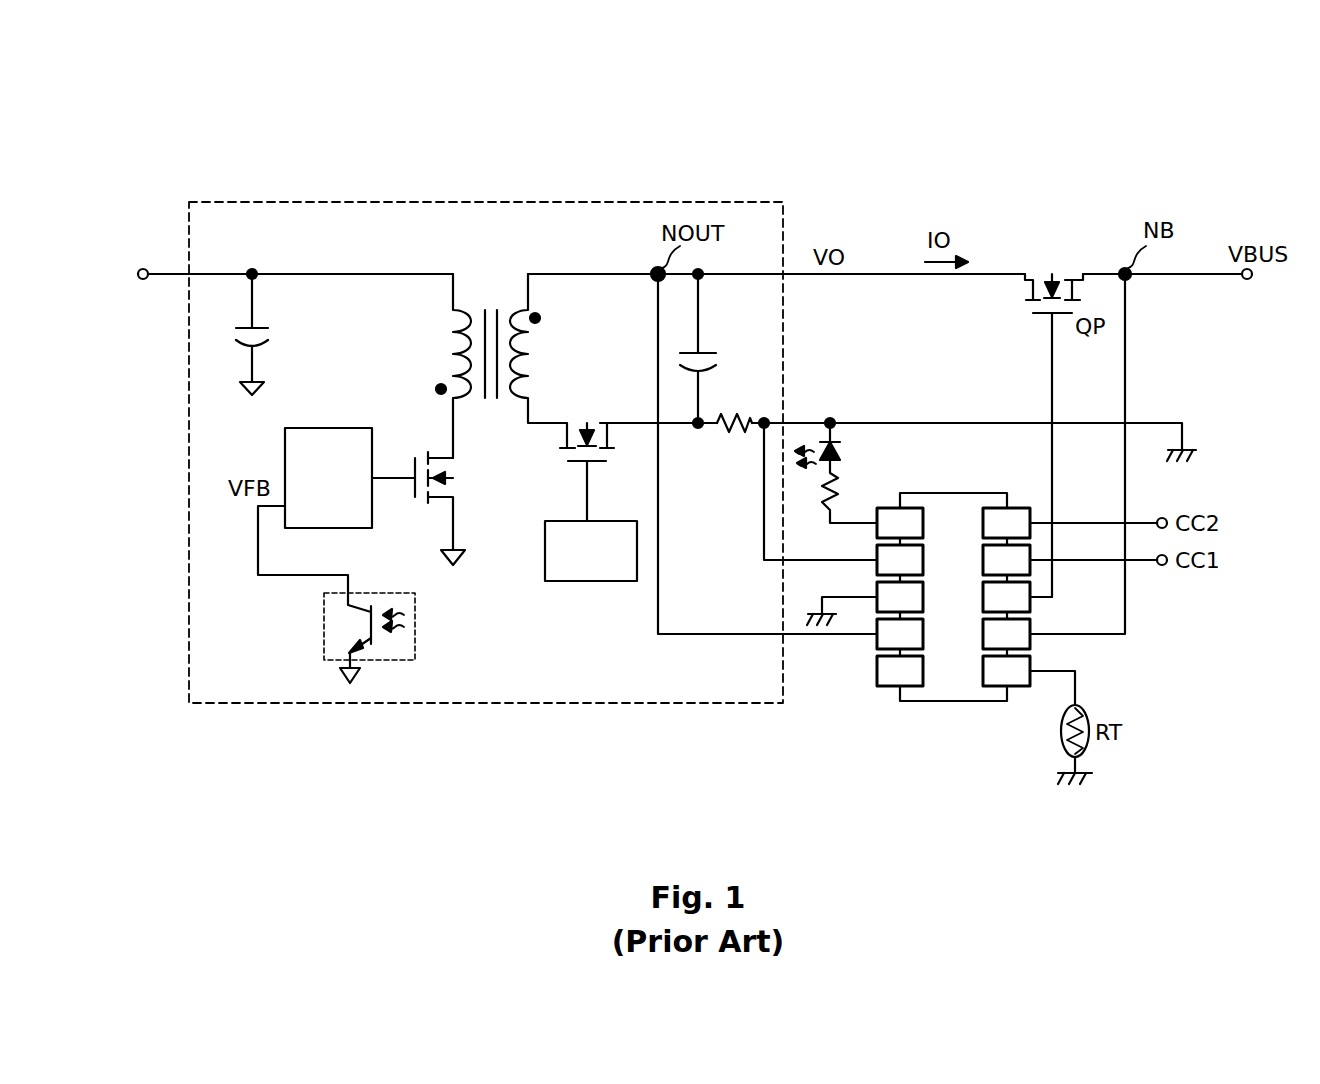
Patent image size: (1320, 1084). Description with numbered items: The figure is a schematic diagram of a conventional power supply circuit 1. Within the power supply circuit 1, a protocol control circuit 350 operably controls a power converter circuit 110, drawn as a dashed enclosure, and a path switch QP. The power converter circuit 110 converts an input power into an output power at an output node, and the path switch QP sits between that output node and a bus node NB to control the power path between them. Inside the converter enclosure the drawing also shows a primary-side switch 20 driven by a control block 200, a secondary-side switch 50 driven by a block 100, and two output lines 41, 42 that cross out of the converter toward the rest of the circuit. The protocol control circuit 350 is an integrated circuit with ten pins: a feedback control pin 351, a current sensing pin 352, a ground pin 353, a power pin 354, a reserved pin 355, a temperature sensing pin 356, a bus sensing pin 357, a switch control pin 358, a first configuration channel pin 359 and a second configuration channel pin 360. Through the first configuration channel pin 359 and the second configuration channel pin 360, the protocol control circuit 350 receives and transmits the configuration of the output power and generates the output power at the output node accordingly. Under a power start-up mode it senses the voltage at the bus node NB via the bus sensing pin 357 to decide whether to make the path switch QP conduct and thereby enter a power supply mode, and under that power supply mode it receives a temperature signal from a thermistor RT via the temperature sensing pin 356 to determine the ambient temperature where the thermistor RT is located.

The power supply circuit 1 is at (398, 80).
The primary side power switch transistor 20 is at (418, 492).
The synchronous rectifier transistor 50 is at (599, 472).
The synchronous rectifier controller 100 is at (572, 563).
The power converter circuit 110 is at (582, 685).
The primary side controller 200 is at (309, 496).
The protocol control circuit 350 is at (937, 585).
The feedback control pin 351 is at (884, 533).
The current sensing pin 352 is at (884, 570).
The ground pin 353 is at (884, 607).
The power pin 354 is at (884, 644).
The reserved pin 355 is at (884, 681).
The temperature sensing pin 356 is at (991, 681).
The bus sensing pin 357 is at (991, 644).
The switch control pin 358 is at (991, 607).
The first configuration channel pin 359 is at (991, 570).
The second configuration channel pin 360 is at (991, 533).
The output voltage line 41 is at (497, 758).
The output ground line 42 is at (497, 758).